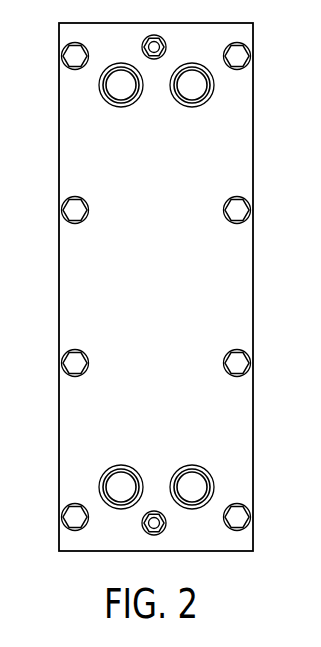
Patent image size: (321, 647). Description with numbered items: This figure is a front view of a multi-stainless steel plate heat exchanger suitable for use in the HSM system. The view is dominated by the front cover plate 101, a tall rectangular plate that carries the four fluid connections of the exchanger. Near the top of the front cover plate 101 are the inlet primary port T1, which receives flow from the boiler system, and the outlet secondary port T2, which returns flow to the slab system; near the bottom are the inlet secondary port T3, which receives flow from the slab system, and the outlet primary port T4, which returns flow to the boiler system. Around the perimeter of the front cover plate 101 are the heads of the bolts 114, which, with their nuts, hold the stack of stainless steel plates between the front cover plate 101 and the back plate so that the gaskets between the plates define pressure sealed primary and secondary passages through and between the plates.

The front cover plate 101 is at (240, 157).
The bolts 114 is at (238, 358).
The inlet primary port T1 is at (121, 98).
The outlet secondary port T2 is at (192, 98).
The inlet secondary port T3 is at (121, 476).
The outlet primary port T4 is at (192, 476).